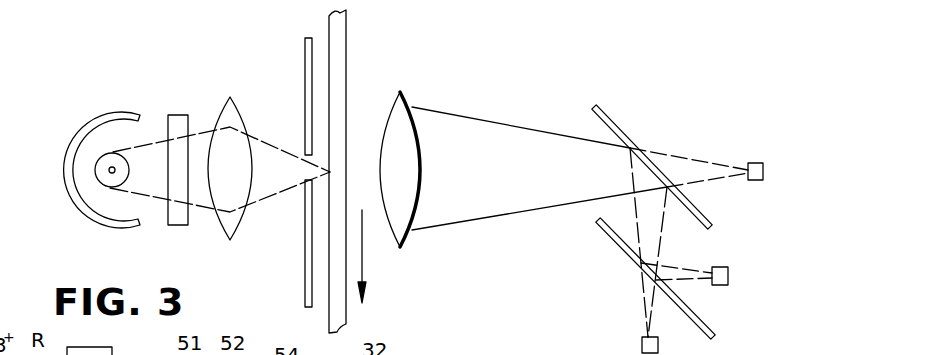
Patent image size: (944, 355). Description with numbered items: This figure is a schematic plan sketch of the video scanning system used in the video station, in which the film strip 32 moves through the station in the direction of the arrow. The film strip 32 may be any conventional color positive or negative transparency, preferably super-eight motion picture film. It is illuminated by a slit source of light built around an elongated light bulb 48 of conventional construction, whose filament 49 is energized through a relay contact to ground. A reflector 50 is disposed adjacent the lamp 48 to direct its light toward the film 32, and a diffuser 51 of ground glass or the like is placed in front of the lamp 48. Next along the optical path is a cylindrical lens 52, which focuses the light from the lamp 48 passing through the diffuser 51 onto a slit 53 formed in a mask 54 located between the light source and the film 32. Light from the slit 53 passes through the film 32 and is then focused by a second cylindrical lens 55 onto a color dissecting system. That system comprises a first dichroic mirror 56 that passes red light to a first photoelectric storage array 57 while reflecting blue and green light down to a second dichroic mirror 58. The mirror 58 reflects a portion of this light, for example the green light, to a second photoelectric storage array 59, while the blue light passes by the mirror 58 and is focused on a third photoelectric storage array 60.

The film strip 32 is at (347, 68).
The light bulb 48 is at (100, 181).
The filament 49 is at (115, 170).
The reflector 50 is at (96, 124).
The diffuser 51 is at (176, 116).
The cylindrical lens 52 is at (240, 110).
The slit 53 is at (305, 180).
The mask 54 is at (305, 290).
The second cylindrical lens 55 is at (417, 133).
The first dichroic mirror 56 is at (608, 115).
The first photoelectric storage array 57 is at (755, 163).
The second dichroic mirror 58 is at (617, 245).
The second photoelectric storage array 59 is at (728, 267).
The third photoelectric storage array 60 is at (642, 343).